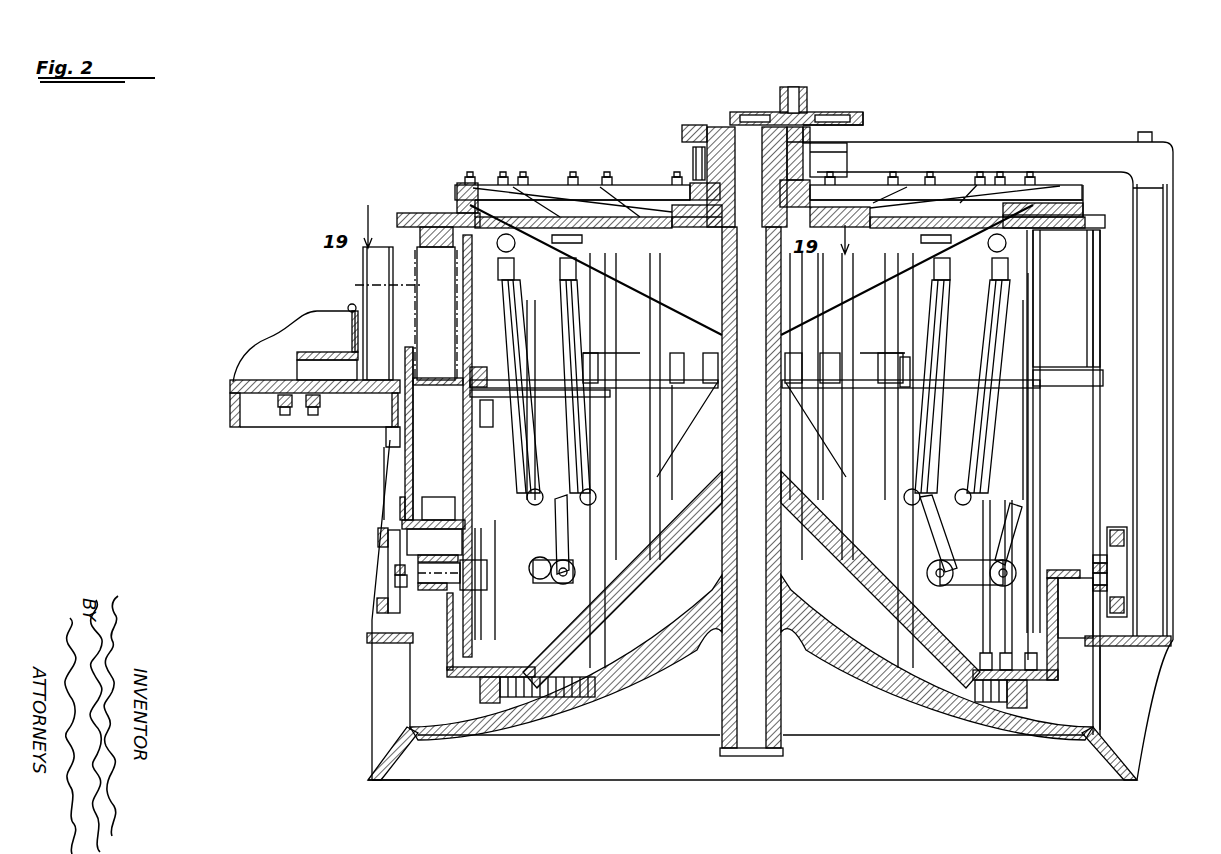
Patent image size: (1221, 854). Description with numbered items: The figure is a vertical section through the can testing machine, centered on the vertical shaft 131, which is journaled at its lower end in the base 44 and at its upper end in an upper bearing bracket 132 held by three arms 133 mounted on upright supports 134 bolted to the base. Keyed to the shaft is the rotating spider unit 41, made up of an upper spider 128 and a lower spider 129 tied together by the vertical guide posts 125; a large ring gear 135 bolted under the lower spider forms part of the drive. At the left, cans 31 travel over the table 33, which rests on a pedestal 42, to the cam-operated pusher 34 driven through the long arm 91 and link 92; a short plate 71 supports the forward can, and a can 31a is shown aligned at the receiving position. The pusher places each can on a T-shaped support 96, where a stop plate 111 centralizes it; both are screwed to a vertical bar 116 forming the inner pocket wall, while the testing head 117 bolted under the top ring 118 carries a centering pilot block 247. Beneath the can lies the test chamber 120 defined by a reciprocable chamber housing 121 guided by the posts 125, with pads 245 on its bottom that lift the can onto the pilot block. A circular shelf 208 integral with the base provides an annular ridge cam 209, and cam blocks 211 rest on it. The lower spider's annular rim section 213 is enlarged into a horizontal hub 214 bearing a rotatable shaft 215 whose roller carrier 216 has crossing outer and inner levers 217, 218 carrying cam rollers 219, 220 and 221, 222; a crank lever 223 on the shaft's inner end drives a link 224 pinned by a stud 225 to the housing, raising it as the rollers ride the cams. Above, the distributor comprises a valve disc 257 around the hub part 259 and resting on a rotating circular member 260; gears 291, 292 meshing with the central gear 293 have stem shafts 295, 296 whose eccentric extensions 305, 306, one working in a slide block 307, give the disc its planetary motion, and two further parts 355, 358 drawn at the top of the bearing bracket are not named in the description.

The can 31 is at (360, 266).
The can in can receiving position 31a is at (371, 284).
The table 33 is at (230, 393).
The cam-operated pusher 34 is at (302, 335).
The spider unit 41 is at (540, 177).
The pedestal 42 is at (383, 487).
The base 44 is at (1152, 702).
The short plate 71 is at (367, 385).
The long arm 91 is at (282, 412).
The link 92 is at (312, 412).
The T-shaped support 96 is at (432, 378).
The stop plate 111 is at (462, 326).
The vertical bar 116 is at (463, 268).
The testing head 117 is at (402, 212).
The top ring 118 is at (460, 200).
The test chamber 120 is at (416, 454).
The chamber housing 121 is at (404, 470).
The vertical guide post 125 is at (672, 424).
The upper spider 128 is at (634, 290).
The lower spider 129 is at (447, 660).
The vertical shaft 131 is at (745, 276).
The upper bearing bracket 132 is at (808, 145).
The arm 133 is at (975, 142).
The upright support 134 is at (1173, 222).
The large ring gear 135 is at (480, 698).
The circular shelf 208 is at (1172, 640).
The annular ridge cam 209 is at (1100, 604).
The cam block 211 is at (378, 625).
The annular lower rim section 213 is at (445, 640).
The horizontal hub 214 is at (450, 555).
The rotatable shaft 215 is at (432, 592).
The roller carrier 216 is at (396, 582).
The outer lever 217 is at (390, 552).
The inner lever 218 is at (396, 568).
The cam roller 219 is at (378, 608).
The cam roller 220 is at (378, 535).
The cam roller 221 is at (1128, 588).
The cam roller 222 is at (433, 537).
The crank lever 223 is at (490, 600).
The link 224 is at (500, 434).
The inwardly projecting stud 225 is at (492, 378).
The pad 245 is at (444, 505).
The centering pilot block 247 is at (437, 228).
The valve disc 257 is at (812, 190).
The hub part 259 is at (705, 232).
The circular member 260 is at (696, 227).
The gear 291 is at (695, 125).
The gear 292 is at (778, 112).
The central gear 293 is at (738, 112).
The stem shaft 295 is at (707, 150).
The stem shaft 296 is at (806, 128).
The eccentric extension 305 is at (692, 163).
The eccentric extension 306 is at (830, 170).
The slide block 307 is at (692, 188).
The stud 355 is at (806, 92).
The plate 358 is at (862, 115).